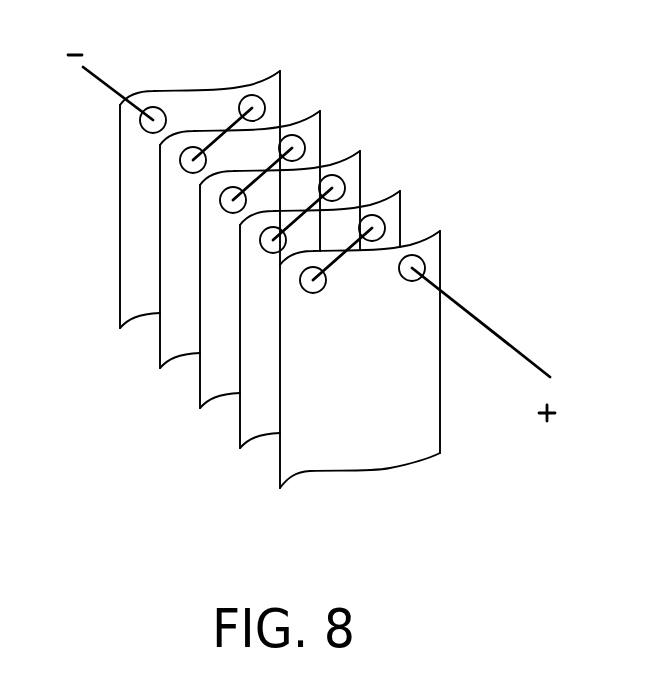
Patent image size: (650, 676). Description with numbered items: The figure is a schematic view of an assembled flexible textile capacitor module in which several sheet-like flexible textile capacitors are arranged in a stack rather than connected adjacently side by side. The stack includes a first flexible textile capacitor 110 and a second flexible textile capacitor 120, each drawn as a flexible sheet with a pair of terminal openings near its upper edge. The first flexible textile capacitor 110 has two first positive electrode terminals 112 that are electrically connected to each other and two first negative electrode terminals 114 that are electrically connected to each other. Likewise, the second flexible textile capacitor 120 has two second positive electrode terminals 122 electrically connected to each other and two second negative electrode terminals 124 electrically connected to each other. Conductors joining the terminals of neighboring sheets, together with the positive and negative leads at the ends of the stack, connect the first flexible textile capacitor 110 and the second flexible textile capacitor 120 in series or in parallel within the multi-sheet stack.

The first flexible textile capacitor 110 is at (140, 195).
The first positive electrode terminals 112 is at (263, 102).
The first negative electrode terminals 114 is at (165, 108).
The second flexible textile capacitor 120 is at (177, 300).
The second positive electrode terminals 122 is at (302, 143).
The second negative electrode terminals 124 is at (200, 148).